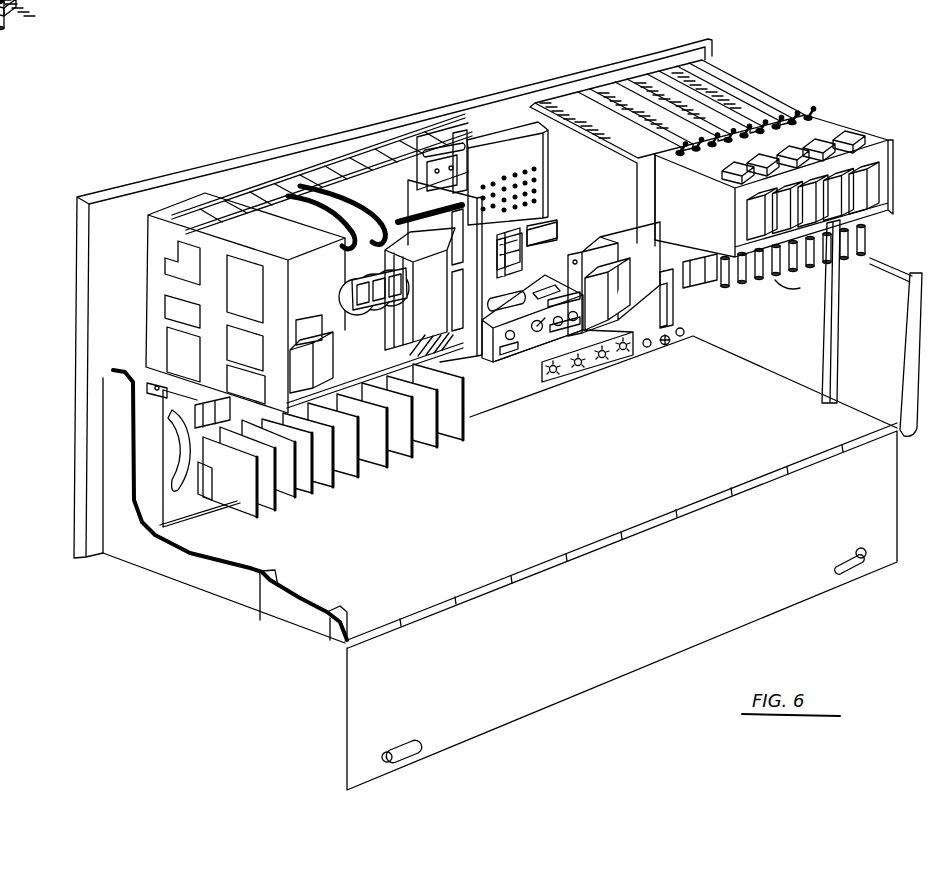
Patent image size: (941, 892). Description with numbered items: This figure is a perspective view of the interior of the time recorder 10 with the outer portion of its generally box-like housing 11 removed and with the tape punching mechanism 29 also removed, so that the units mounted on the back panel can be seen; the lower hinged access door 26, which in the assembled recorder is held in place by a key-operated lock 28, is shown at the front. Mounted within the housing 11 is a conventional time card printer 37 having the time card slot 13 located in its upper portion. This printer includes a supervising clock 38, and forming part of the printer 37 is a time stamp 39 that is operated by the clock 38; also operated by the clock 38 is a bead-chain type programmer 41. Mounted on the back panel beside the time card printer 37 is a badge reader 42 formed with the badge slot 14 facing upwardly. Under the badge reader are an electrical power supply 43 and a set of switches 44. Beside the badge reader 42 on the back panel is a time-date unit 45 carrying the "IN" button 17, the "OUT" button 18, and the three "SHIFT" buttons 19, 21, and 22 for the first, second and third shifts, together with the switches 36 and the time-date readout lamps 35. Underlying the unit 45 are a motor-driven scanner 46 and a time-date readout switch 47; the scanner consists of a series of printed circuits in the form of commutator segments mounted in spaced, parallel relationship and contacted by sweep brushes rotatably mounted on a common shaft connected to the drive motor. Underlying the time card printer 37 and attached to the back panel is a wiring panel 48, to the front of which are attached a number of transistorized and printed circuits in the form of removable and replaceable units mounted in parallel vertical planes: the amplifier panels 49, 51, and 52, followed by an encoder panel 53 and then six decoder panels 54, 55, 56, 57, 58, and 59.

The time recorder 10 is at (547, 79).
The housing 11 is at (125, 551).
The time card slot 13 is at (298, 200).
The badge slot 14 is at (500, 133).
The "IN" button 17 is at (735, 172).
The "OUT" button 18 is at (735, 153).
The "SHIFT" button 19 is at (815, 142).
The "SHIFT" button 21 is at (838, 134).
The "SHIFT" button 22 is at (862, 137).
The hinged access door 26 is at (620, 666).
The key-operated lock 28 is at (846, 570).
The tape punching mechanism 29 is at (413, 758).
The time-date readout lamps 35 is at (718, 80).
The switches 36 is at (783, 140).
The time card printer 37 is at (158, 237).
The supervising clock 38 is at (395, 300).
The time stamp 39 is at (368, 230).
The bead-chain type programmer 41 is at (453, 333).
The badge reader 42 is at (440, 137).
The electrical power supply 43 is at (532, 347).
The set of switches 44 is at (587, 362).
The time-date unit 45 is at (467, 128).
The motor-driven scanner 46 is at (760, 297).
The time-date readout switch 47 is at (666, 345).
The wiring panel 48 is at (190, 507).
The amplifier panel 49 is at (247, 510).
The amplifier panel 51 is at (270, 510).
The amplifier panel 52 is at (290, 500).
The encoder panel 53 is at (317, 493).
The decoder panel 54 is at (355, 490).
The decoder panel 55 is at (360, 480).
The decoder panel 56 is at (390, 455).
The decoder panel 57 is at (407, 453).
The decoder panel 58 is at (432, 440).
The decoder panel 59 is at (466, 428).